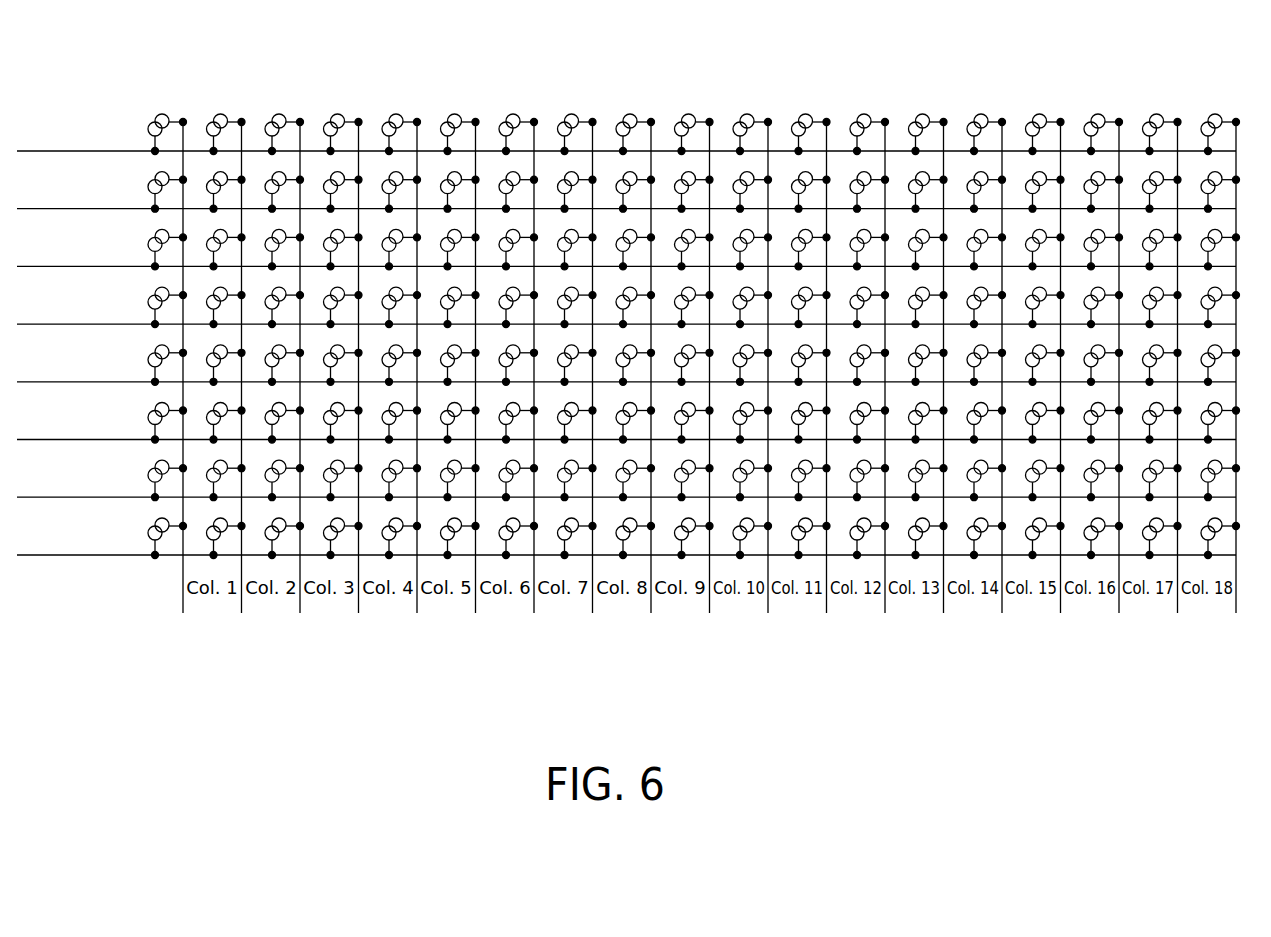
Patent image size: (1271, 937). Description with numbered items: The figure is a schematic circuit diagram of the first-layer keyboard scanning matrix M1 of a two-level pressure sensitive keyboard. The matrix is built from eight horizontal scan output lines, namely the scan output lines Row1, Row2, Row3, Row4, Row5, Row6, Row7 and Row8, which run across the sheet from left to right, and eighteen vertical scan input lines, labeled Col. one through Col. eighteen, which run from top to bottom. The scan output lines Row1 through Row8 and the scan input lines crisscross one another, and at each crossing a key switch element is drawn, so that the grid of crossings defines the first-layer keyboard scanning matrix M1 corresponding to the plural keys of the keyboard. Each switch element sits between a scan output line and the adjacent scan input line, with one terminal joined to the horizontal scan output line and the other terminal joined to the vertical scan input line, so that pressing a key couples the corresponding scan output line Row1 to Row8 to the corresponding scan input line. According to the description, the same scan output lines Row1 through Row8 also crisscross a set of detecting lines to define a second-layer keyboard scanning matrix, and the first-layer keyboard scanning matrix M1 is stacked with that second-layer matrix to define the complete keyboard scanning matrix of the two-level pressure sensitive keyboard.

The first-layer keyboard scanning matrix M1 is at (740, 82).
The scan output line Row1 is at (626, 134).
The scan output line Row2 is at (626, 192).
The scan output line Row3 is at (626, 249).
The scan output line Row4 is at (626, 307).
The scan output line Row5 is at (626, 365).
The scan output line Row6 is at (626, 423).
The scan output line Row7 is at (626, 480).
The scan output line Row8 is at (626, 538).